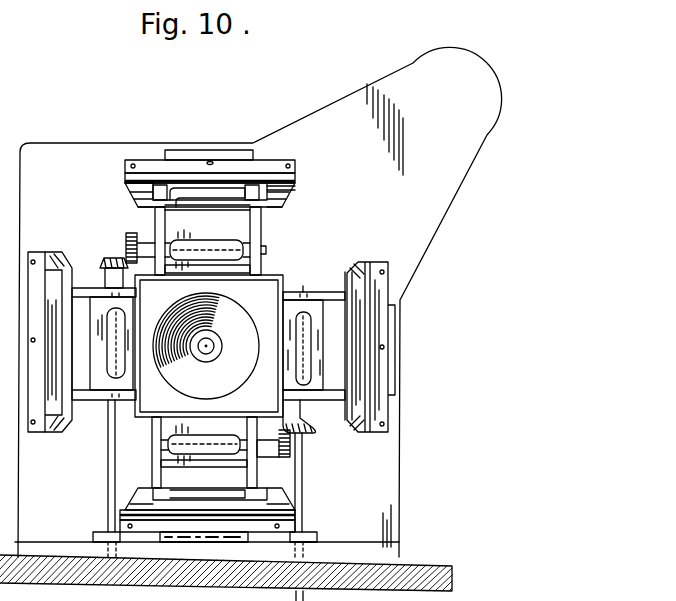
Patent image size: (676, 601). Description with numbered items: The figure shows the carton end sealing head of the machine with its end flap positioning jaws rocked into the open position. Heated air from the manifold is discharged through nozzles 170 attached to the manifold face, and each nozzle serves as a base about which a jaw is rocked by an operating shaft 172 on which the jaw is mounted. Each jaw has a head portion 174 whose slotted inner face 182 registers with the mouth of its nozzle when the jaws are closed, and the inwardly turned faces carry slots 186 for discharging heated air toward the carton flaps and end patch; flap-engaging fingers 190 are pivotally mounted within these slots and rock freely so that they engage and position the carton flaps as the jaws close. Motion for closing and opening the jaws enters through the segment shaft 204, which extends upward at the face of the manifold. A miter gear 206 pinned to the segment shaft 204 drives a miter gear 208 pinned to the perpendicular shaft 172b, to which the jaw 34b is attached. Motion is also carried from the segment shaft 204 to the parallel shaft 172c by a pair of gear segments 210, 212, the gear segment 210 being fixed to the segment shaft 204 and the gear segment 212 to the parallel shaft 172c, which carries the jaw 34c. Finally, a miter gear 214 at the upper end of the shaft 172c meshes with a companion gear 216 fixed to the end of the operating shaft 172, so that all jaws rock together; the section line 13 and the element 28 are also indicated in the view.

The section line 13- 13 is at (210, 126).
The head portion 174 is at (150, 162).
The slotted inner face 182 is at (258, 183).
The slots 186 is at (297, 188).
The flap-engaging fingers 190 is at (190, 204).
The companion gear 216 is at (132, 232).
The miter gear 214 is at (112, 258).
The jaw 34c is at (40, 252).
The operating shaft 172 is at (262, 248).
The nozzles 170 is at (248, 264).
The spiral plate 28 is at (228, 306).
The perpendicular shaft 172b is at (152, 442).
The jaw 34b is at (128, 488).
The parallel shaft 172c is at (110, 489).
The miter gear 206 is at (312, 433).
The miter gear 208 is at (303, 473).
The gear segment 212 is at (148, 547).
The gear segment 210 is at (258, 546).
The segment shaft 204 is at (296, 592).